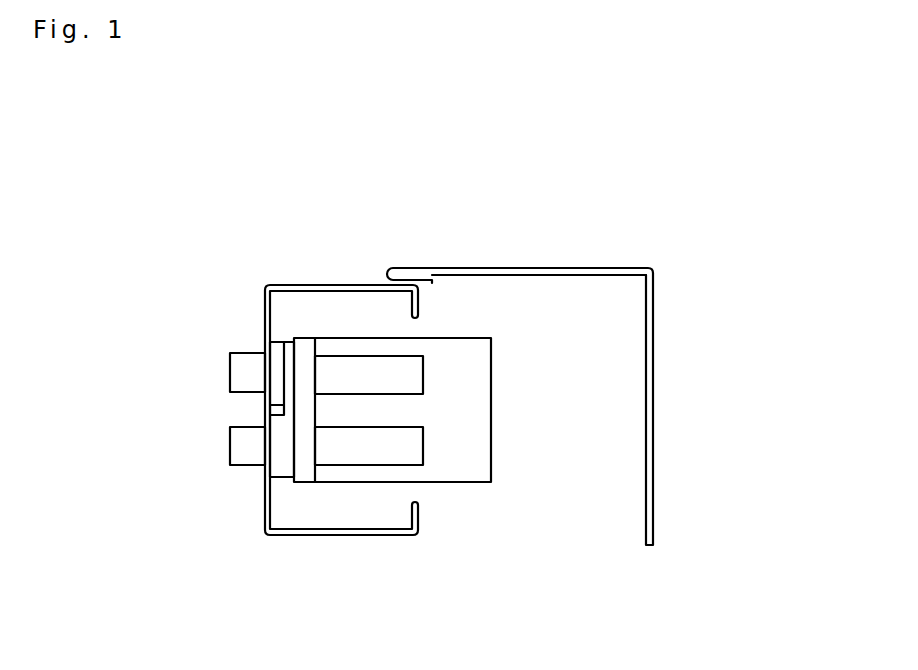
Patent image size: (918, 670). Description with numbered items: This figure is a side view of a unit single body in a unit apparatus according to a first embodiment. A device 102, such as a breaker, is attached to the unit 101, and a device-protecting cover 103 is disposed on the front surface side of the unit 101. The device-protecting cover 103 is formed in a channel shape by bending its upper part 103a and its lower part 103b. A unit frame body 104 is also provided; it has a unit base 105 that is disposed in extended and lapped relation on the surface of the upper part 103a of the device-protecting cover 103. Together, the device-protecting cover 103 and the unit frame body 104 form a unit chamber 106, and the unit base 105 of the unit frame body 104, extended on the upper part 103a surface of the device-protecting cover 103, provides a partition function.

The unit 101 is at (230, 372).
The device 102 is at (358, 482).
The device-protecting cover 103 is at (265, 310).
The upper part 103a is at (350, 285).
The lower part 103b is at (325, 535).
The unit frame body 104 is at (628, 268).
The unit base 105 is at (457, 268).
The unit chamber 106 is at (655, 417).